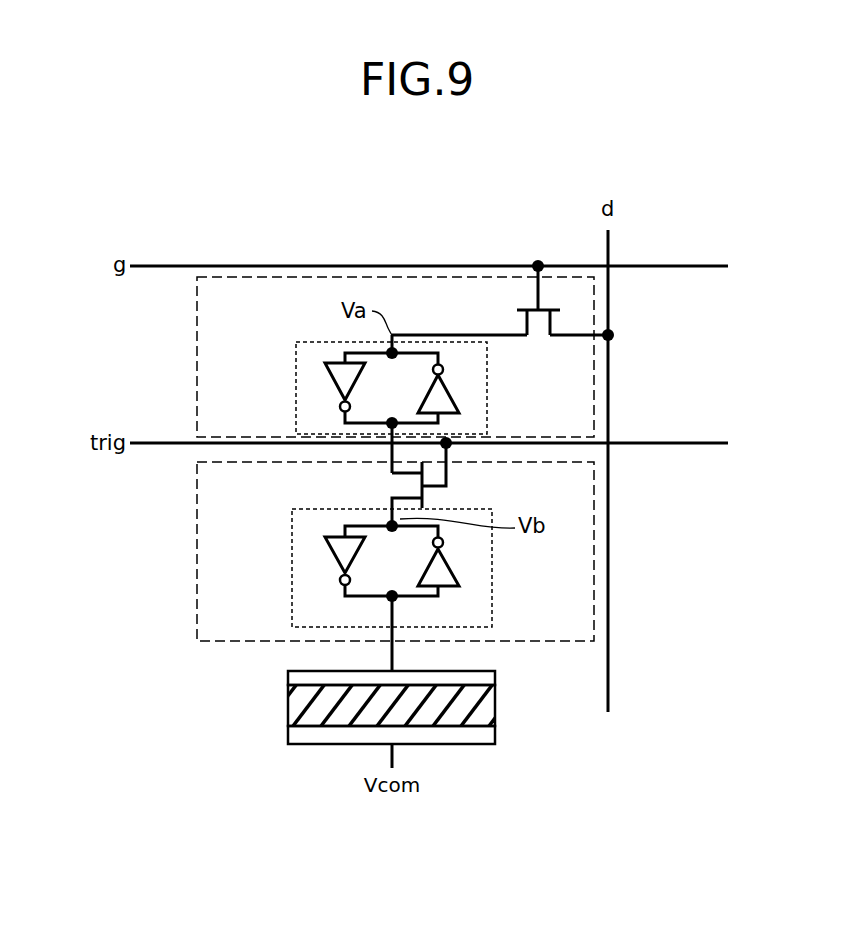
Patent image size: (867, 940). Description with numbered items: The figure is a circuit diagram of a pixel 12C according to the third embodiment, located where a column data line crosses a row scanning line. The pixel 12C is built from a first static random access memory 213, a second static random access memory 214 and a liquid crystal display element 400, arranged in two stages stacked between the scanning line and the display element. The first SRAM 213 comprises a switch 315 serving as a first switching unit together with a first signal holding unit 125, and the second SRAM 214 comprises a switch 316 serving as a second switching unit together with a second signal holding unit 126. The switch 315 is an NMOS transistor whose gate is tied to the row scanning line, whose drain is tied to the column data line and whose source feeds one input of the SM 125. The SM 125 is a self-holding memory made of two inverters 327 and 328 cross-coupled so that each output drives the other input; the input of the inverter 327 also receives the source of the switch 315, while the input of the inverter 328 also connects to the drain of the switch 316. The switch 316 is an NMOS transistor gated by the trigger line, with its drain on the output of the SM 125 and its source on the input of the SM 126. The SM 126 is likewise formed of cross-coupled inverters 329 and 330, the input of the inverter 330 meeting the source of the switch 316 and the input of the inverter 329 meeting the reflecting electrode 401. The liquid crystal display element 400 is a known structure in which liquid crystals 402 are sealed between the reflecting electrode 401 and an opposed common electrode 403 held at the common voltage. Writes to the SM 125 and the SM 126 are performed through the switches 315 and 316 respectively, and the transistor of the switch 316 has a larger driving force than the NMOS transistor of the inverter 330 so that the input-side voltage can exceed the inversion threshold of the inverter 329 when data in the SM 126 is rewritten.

The pixel 12C is at (526, 220).
The first static random access memory 213 is at (196, 321).
The second static random access memory 214 is at (196, 491).
The first signal holding unit 125 is at (296, 351).
The second signal holding unit 126 is at (292, 518).
The switch 315 is at (565, 323).
The switch 316 is at (448, 470).
The inverter 327 is at (325, 390).
The inverter 328 is at (455, 394).
The inverter 329 is at (325, 566).
The inverter 330 is at (455, 570).
The liquid crystal display element 400 is at (381, 704).
The reflecting electrode 401 is at (496, 678).
The liquid crystals 402 is at (496, 703).
The common electrode 403 is at (496, 733).